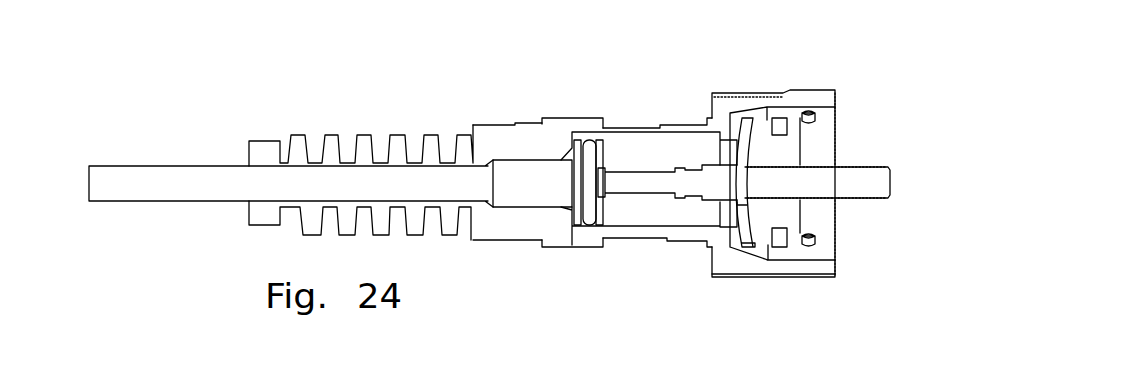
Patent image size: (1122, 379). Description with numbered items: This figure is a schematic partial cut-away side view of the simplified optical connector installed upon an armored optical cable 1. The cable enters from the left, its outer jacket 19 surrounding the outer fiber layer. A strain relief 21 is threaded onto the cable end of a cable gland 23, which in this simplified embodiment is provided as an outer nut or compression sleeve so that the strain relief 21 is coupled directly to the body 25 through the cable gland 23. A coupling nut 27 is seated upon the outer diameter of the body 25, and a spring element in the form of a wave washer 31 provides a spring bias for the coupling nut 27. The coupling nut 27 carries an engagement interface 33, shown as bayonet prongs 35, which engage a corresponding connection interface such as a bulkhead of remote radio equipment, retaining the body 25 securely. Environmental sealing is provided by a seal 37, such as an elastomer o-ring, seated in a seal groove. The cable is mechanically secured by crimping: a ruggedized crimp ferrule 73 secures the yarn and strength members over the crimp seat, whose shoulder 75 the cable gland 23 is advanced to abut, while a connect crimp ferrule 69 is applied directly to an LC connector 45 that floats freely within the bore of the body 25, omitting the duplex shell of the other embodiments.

The armored optical cable 1 is at (291, 136).
The outer jacket 19 is at (144, 183).
The strain relief 21 is at (366, 148).
The cable gland 23 is at (577, 120).
The body 25 is at (660, 128).
The coupling nut 27 is at (805, 100).
The wave washer 31 is at (743, 205).
The engagement interface 33 is at (872, 228).
The bayonet prongs 35 is at (815, 243).
The seal 37 is at (592, 222).
The LC connector 45 is at (866, 185).
The connect crimp ferrule 69 is at (723, 192).
The ruggedized crimp ferrule 73 is at (522, 185).
The shoulder 75 is at (588, 197).